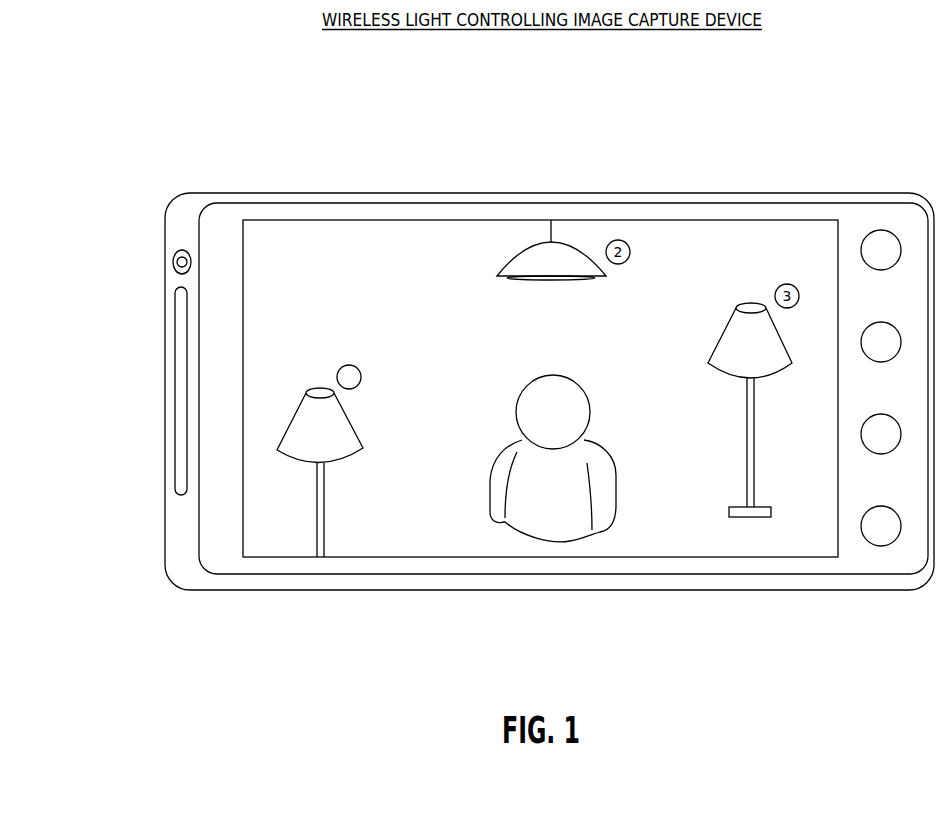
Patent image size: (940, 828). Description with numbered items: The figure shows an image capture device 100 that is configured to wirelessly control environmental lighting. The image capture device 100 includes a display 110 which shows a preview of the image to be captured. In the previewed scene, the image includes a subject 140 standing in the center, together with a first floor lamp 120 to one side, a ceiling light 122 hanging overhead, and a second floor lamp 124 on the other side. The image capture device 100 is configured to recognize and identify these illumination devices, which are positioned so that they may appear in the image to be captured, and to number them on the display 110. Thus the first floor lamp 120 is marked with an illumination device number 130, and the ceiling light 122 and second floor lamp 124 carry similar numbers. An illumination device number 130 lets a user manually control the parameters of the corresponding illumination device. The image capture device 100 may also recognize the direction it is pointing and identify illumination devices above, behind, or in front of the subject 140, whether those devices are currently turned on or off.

The image capture device 100 is at (189, 124).
The display 110 is at (312, 221).
The first floor lamp 120 is at (350, 425).
The ceiling light 122 is at (577, 246).
The second floor lamp 124 is at (788, 353).
The illumination device number 130 is at (352, 366).
The subject 140 is at (567, 378).